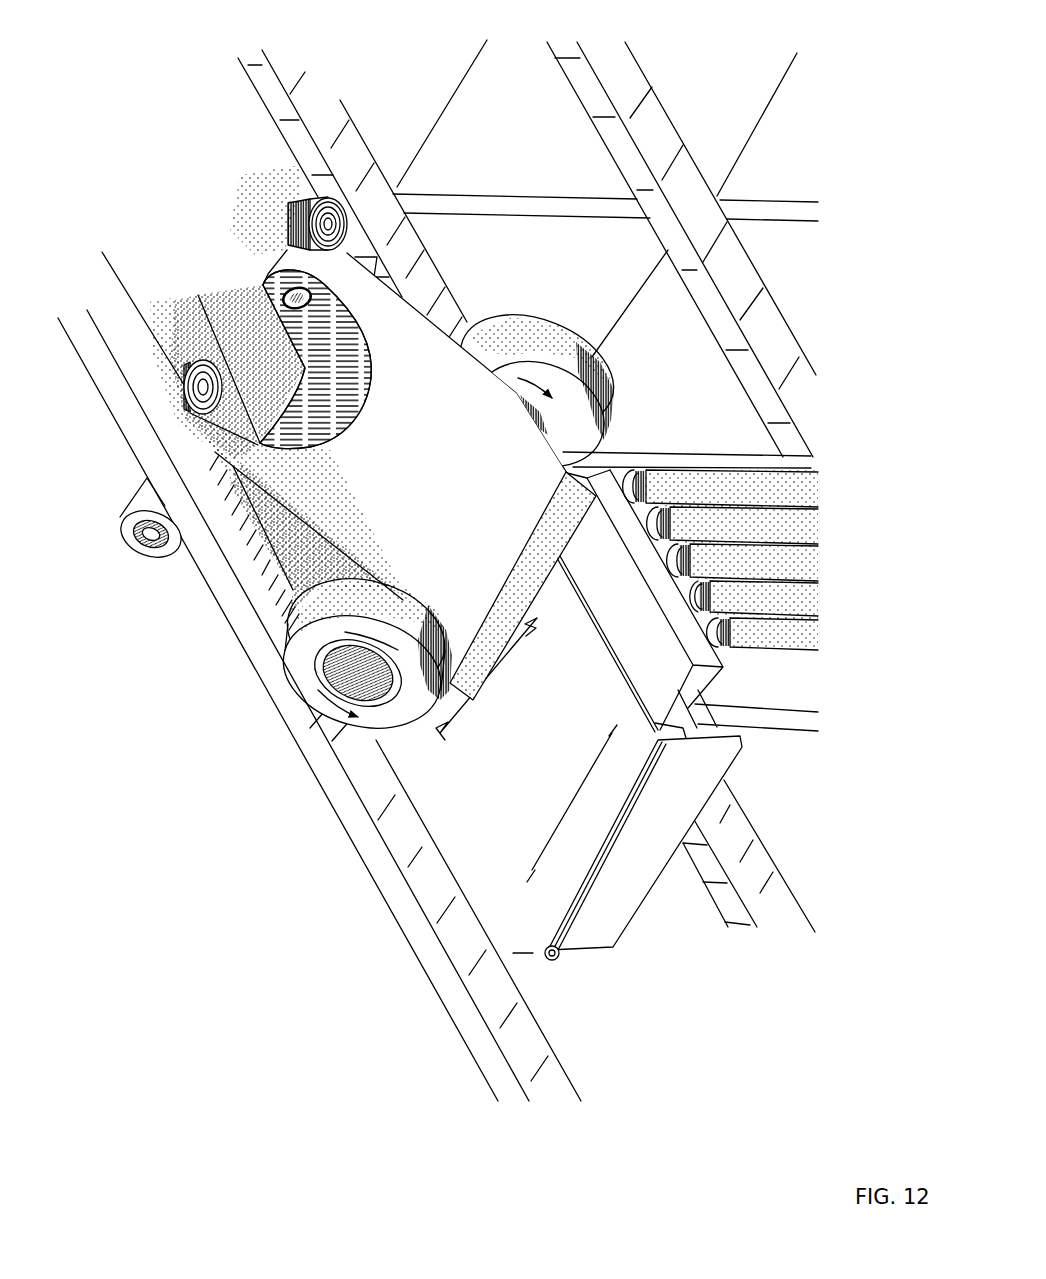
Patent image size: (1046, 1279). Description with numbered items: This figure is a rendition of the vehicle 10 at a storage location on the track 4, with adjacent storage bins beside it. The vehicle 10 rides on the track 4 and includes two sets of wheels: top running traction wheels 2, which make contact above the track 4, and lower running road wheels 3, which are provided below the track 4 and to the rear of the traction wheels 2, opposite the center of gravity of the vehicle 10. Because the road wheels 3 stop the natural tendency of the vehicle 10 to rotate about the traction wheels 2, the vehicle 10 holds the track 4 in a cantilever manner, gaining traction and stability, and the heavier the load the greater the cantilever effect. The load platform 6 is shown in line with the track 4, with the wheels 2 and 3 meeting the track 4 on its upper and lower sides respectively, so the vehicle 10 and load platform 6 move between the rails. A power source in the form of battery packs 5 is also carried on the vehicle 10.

The traction wheels 2 is at (554, 338).
The road wheels 3 is at (277, 206).
The track 4 is at (383, 152).
The battery packs 5 is at (418, 712).
The load platform 6 is at (440, 930).
The vehicle 10 is at (306, 334).